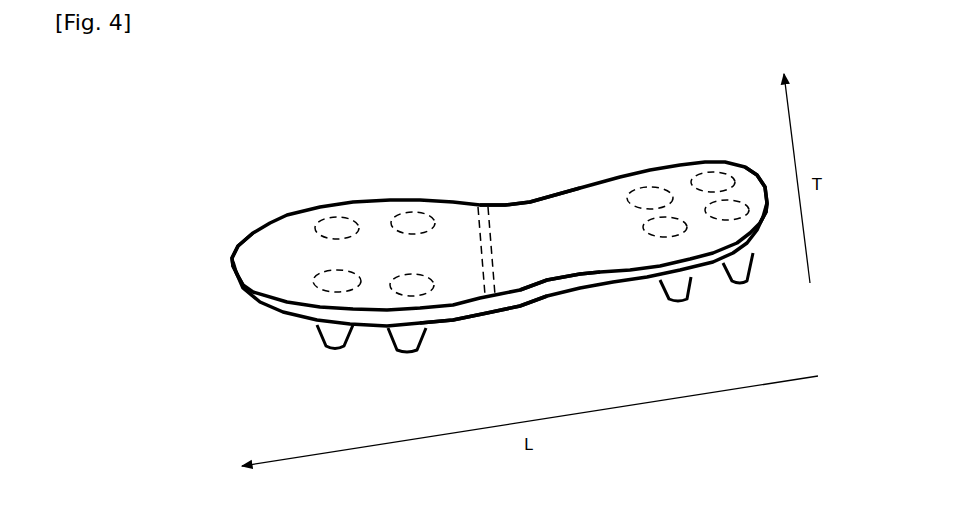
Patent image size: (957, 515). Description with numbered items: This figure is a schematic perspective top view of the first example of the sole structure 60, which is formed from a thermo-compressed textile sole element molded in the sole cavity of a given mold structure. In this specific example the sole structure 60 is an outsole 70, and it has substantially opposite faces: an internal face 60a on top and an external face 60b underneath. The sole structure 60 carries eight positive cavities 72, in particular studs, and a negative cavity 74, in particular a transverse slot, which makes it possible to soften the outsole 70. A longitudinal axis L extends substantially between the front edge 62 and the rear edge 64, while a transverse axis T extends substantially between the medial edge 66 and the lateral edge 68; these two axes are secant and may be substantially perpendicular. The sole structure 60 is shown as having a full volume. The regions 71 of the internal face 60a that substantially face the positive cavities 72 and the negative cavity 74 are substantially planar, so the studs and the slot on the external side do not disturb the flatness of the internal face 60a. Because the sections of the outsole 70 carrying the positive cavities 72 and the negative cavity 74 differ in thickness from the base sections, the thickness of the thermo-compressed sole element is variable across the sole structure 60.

The sole structure 60 is at (443, 281).
The outsole 70 is at (210, 353).
The internal face 60a is at (570, 250).
The external face 60b is at (508, 310).
The front edge 62 is at (231, 259).
The rear edge 64 is at (763, 180).
The medial edge 66 is at (530, 200).
The lateral edge 68 is at (553, 290).
The regions of the internal face 71 is at (533, 252).
The positive cavities 72 is at (412, 283).
The negative cavity 74 is at (480, 207).